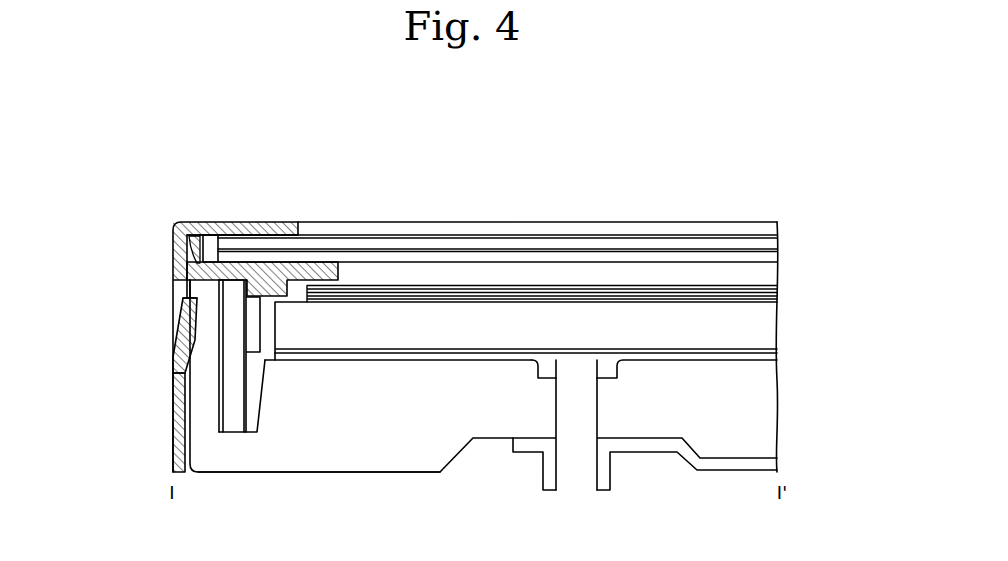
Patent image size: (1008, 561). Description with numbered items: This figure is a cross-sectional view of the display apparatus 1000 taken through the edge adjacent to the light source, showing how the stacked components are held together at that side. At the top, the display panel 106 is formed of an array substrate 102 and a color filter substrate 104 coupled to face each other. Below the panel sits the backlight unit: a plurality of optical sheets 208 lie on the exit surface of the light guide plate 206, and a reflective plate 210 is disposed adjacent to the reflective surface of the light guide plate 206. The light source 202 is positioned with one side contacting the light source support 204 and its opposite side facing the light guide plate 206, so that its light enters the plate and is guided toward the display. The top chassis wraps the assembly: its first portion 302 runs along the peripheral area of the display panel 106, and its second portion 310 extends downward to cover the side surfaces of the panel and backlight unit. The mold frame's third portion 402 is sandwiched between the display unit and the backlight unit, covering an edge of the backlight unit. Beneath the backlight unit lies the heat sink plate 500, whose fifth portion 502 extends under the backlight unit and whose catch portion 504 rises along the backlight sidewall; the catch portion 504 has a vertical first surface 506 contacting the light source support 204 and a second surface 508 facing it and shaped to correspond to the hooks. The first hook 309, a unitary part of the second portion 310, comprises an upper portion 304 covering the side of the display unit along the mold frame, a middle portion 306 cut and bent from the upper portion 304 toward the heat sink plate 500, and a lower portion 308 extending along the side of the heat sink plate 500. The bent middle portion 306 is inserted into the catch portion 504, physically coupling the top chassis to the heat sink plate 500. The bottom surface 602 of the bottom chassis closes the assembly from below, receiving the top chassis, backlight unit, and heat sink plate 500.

The display apparatus 1000 is at (708, 156).
The second portion 310 is at (176, 221).
The first portion 302 is at (250, 231).
The upper portion 304 is at (180, 247).
The middle portion 306 is at (184, 328).
The lower portion 308 is at (178, 370).
The first hook 309 is at (90, 250).
The third portion 402 is at (270, 288).
The catch portion 504 is at (208, 246).
The array substrate 102 is at (776, 243).
The color filter substrate 104 is at (773, 258).
The display panel 106 is at (855, 230).
The optical sheets 208 is at (785, 283).
The light guide plate 206 is at (775, 328).
The reflective plate 210 is at (775, 355).
The light source 202 is at (253, 346).
The light source support 204 is at (233, 424).
The first surface 506 is at (219, 414).
The heat sink plate 500 is at (344, 478).
The fifth portion 502 is at (400, 475).
The second surface 508 is at (178, 398).
The bottom surface 602 is at (718, 472).